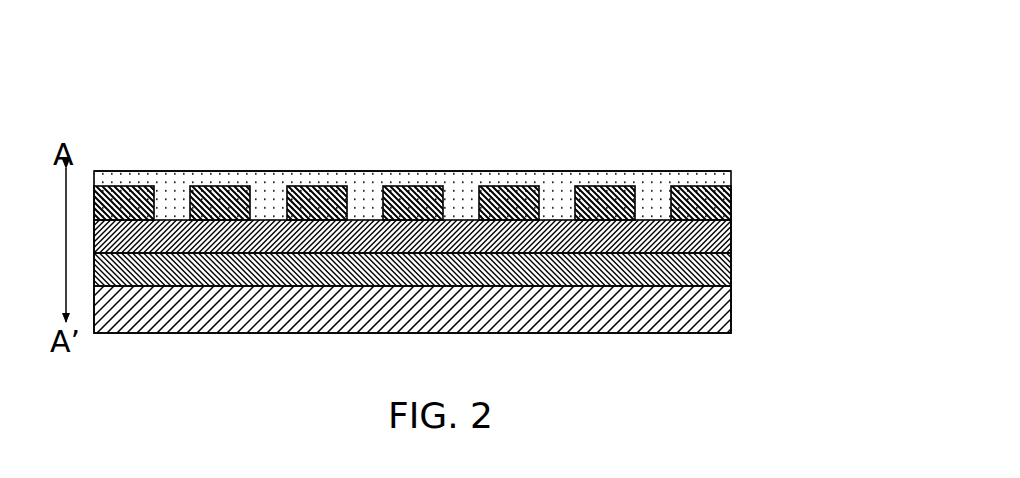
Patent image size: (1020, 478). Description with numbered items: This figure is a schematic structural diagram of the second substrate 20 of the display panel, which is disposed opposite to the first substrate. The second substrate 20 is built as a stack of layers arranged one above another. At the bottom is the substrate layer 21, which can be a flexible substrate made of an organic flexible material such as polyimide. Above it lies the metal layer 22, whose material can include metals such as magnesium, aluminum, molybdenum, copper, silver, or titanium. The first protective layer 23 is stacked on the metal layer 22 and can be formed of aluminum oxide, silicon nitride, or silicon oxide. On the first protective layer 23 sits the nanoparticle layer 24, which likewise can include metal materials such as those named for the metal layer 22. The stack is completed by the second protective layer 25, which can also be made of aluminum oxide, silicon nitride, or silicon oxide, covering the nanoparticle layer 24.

The second substrate 20 is at (686, 90).
The substrate layer 21 is at (706, 319).
The metal layer 22 is at (706, 275).
The first protective layer 23 is at (711, 240).
The nanoparticle layer 24 is at (714, 207).
The second protective layer 25 is at (712, 179).